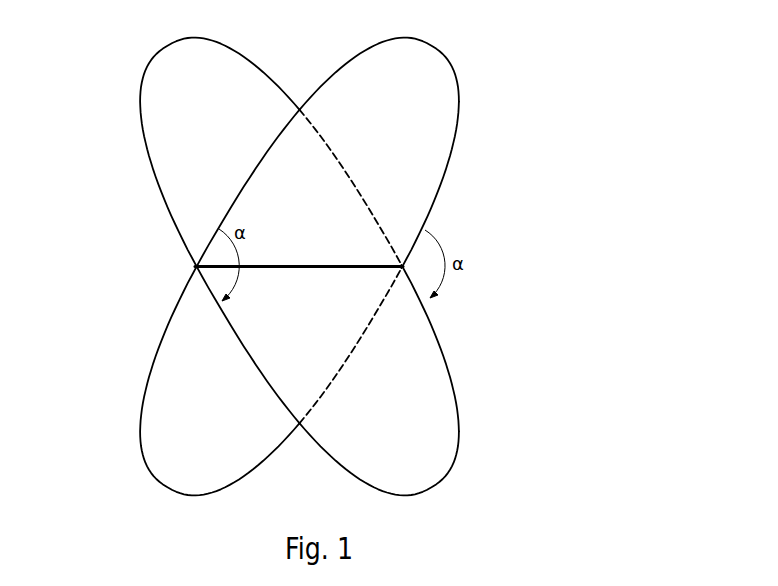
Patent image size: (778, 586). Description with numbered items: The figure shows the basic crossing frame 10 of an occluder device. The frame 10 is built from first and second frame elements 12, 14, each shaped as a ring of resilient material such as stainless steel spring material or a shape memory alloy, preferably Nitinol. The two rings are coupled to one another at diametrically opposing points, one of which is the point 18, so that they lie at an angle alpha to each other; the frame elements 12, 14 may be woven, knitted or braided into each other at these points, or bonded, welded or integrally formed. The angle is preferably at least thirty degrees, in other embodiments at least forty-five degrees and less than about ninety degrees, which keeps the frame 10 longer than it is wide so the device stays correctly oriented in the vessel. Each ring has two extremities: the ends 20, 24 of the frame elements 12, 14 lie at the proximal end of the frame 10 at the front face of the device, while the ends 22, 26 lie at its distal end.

The frame 10 is at (592, 63).
The first frame element 12 is at (455, 180).
The second frame element 14 is at (462, 405).
The coupling point 18 is at (383, 232).
The end of first frame element 20 is at (427, 43).
The end of first frame element 22 is at (158, 487).
The end of second frame element 24 is at (427, 493).
The end of second frame element 26 is at (142, 70).